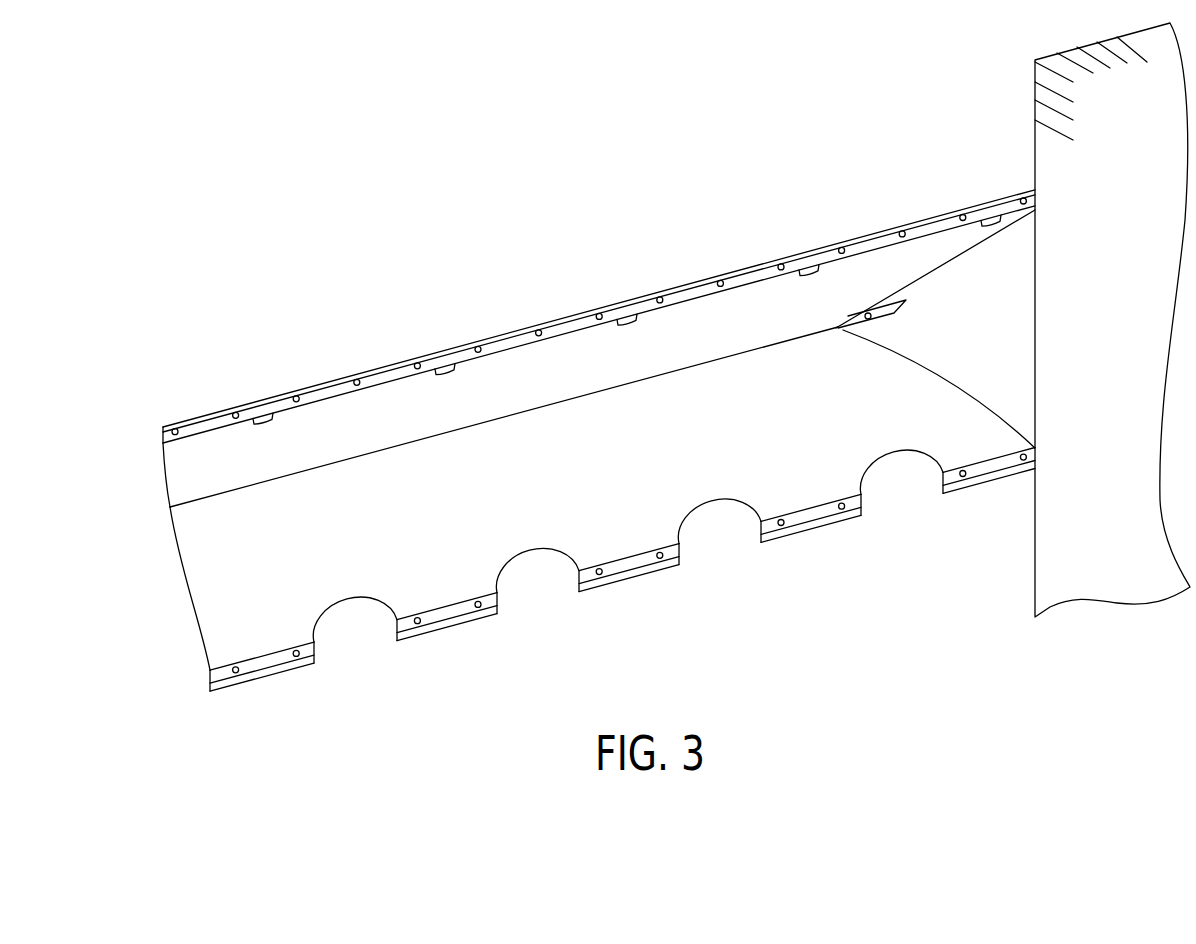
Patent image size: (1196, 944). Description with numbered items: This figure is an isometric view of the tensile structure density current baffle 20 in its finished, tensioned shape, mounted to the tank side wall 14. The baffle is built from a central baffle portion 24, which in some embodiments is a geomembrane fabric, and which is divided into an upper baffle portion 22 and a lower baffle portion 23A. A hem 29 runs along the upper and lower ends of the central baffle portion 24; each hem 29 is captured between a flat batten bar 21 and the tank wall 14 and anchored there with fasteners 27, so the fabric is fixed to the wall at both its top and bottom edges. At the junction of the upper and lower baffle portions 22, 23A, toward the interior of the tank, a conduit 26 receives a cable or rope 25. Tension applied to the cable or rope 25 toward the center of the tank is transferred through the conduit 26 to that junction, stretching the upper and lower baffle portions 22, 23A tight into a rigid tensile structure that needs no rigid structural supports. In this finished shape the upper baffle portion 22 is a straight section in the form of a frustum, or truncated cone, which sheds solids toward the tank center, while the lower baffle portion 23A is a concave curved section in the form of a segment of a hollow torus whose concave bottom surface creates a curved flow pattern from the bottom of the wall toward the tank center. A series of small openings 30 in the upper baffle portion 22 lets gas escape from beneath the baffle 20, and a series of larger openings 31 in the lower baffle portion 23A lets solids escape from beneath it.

The tank wall 14 is at (1037, 355).
The density current baffle 20 is at (658, 375).
The flat batten bar 21 is at (563, 318).
The upper baffle portion 22 is at (520, 370).
The lower baffle portion 23A is at (608, 512).
The central baffle portion 24 is at (768, 343).
The cable or rope 25 is at (888, 310).
The conduit 26 is at (853, 317).
The fasteners 27 is at (600, 324).
The hem 29 is at (445, 347).
The small openings 30 is at (263, 415).
The larger openings 31 is at (343, 602).